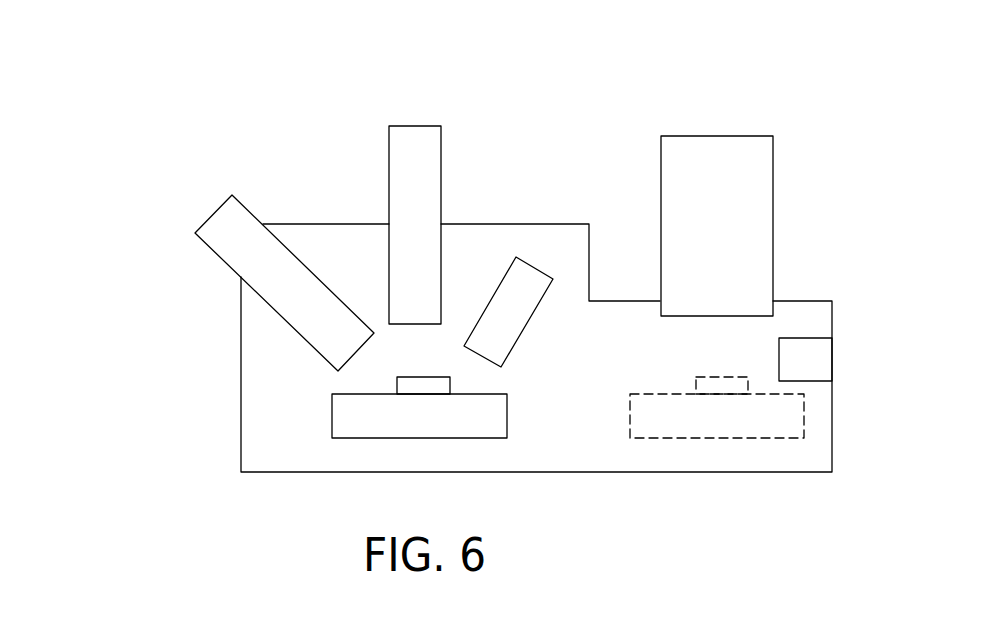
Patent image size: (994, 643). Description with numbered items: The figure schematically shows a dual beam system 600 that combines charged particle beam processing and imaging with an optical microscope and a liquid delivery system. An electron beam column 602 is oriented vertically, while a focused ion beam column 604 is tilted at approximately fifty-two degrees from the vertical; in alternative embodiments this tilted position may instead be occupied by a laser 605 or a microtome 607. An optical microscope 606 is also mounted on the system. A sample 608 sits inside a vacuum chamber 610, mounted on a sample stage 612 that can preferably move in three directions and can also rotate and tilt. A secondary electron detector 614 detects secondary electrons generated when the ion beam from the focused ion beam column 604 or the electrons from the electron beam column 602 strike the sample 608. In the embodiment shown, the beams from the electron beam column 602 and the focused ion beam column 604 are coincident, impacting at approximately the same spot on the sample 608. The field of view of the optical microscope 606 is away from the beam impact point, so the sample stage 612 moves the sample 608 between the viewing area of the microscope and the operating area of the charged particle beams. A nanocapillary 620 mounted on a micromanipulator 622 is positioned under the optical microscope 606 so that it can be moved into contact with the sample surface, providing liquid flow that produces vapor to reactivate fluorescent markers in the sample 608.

The dual beam system 600 is at (234, 62).
The electron beam column 602 is at (441, 172).
The focused ion beam column 604 is at (200, 283).
The laser 605 is at (200, 283).
The microtome 607 is at (212, 250).
The optical microscope 606 is at (773, 181).
The sample 608 is at (417, 377).
The vacuum chamber 610 is at (519, 223).
The sample stage 612 is at (498, 394).
The secondary electron detector 614 is at (530, 265).
The nanocapillary 620 is at (737, 377).
The micromanipulator 622 is at (813, 337).